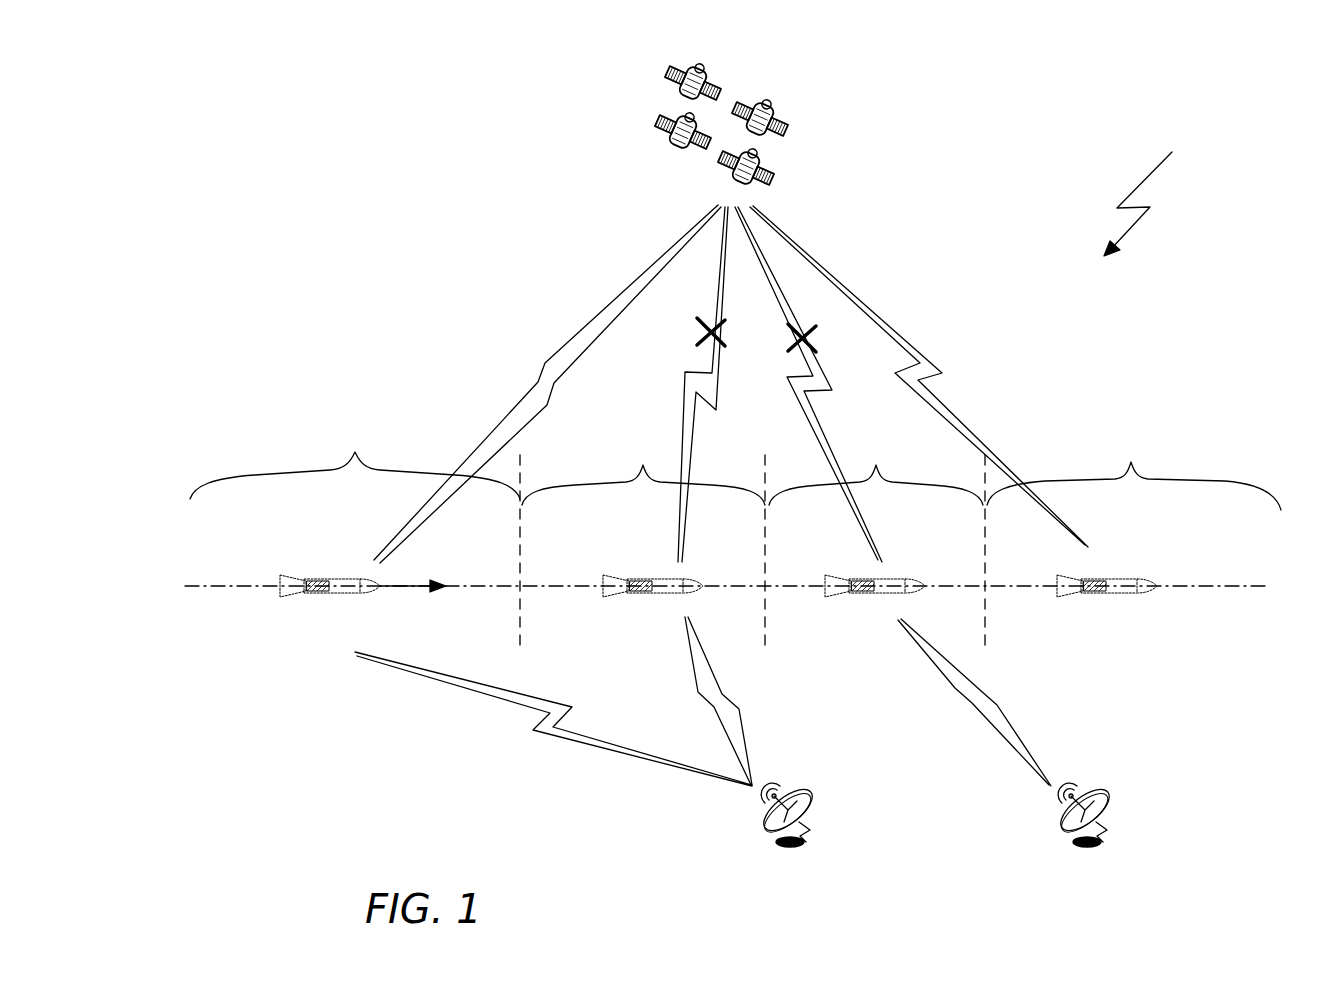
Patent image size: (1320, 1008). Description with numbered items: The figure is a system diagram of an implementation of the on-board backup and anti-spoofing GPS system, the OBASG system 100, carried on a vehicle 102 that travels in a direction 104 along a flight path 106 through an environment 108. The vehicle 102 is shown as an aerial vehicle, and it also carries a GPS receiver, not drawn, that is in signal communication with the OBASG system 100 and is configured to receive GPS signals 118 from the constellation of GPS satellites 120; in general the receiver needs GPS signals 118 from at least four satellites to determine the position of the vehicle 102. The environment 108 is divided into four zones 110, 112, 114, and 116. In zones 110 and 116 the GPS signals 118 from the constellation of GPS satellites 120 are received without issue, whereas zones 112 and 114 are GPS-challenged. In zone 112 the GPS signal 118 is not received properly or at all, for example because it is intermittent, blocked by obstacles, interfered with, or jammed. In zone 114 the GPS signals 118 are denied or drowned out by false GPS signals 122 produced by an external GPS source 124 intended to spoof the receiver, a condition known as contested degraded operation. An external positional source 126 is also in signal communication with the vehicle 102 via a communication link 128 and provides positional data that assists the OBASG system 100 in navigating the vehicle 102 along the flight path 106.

The OBASG system 100 is at (345, 578).
The vehicle 102 is at (350, 595).
The direction 104 is at (400, 595).
The flight path 106 is at (204, 598).
The environment 108 is at (1155, 194).
The zone 110 is at (355, 465).
The zone 112 is at (643, 468).
The zone 114 is at (876, 468).
The zone 116 is at (1134, 471).
The GPS signals 118 is at (600, 335).
The constellation of GPS satellites 120 is at (743, 92).
The false GPS signals 122 is at (975, 735).
The external GPS source 124 is at (1112, 800).
The external positional source 126 is at (815, 818).
The communication link 128 is at (580, 722).